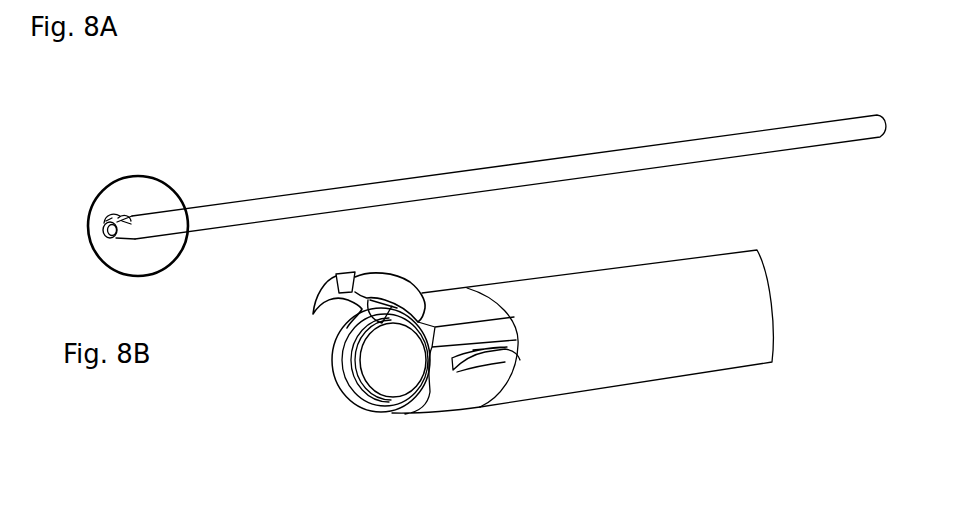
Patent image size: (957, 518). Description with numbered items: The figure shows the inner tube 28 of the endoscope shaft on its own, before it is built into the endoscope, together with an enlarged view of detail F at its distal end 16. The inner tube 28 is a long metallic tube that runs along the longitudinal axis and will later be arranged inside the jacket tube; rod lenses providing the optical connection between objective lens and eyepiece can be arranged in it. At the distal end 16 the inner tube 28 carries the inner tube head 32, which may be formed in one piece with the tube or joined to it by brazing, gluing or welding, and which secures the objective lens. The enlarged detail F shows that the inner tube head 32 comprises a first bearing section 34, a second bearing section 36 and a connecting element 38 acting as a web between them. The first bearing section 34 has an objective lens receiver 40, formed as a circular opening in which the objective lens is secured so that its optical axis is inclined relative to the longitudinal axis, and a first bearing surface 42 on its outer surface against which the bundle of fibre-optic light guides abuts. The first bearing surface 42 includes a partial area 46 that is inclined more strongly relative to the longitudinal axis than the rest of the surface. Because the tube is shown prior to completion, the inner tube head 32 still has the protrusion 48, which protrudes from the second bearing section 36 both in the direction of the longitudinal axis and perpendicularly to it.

In FIG. 8A, the detail F is at (132, 175).
In FIG. 8A, the distal end 16 is at (98, 234).
In FIG. 8A, the inner tube 28 is at (498, 177).
In FIG. 8B, the inner tube 28 is at (603, 290).
In FIG. 8B, the inner tube head 32 is at (462, 295).
In FIG. 8B, the first bearing section 34 is at (392, 411).
In FIG. 8B, the second bearing section 36 is at (333, 294).
In FIG. 8B, the connecting element 38 is at (358, 310).
In FIG. 8B, the objective lens receiver 40 is at (363, 386).
In FIG. 8B, the first bearing surface 42 is at (407, 328).
In FIG. 8B, the partial area 46 is at (453, 366).
In FIG. 8B, the protrusion 48 is at (343, 274).